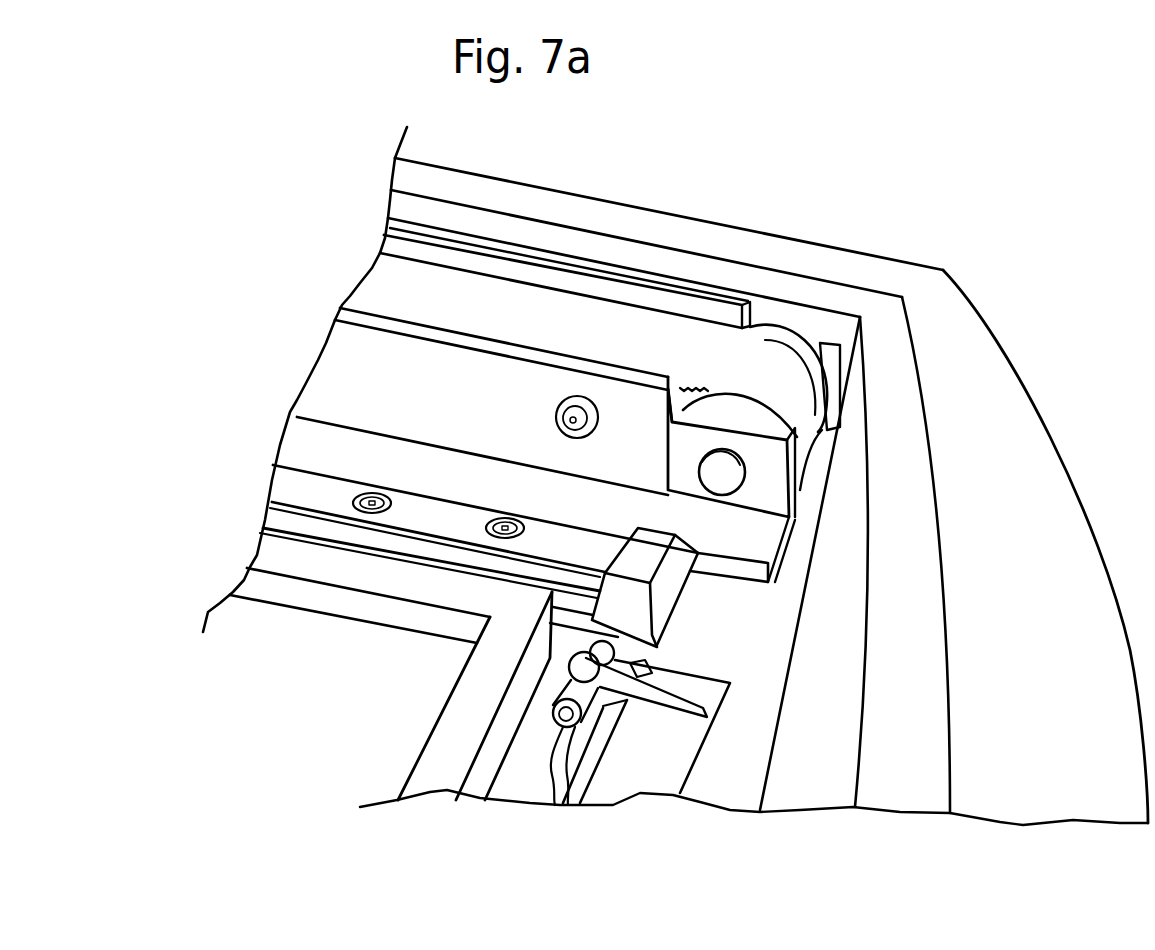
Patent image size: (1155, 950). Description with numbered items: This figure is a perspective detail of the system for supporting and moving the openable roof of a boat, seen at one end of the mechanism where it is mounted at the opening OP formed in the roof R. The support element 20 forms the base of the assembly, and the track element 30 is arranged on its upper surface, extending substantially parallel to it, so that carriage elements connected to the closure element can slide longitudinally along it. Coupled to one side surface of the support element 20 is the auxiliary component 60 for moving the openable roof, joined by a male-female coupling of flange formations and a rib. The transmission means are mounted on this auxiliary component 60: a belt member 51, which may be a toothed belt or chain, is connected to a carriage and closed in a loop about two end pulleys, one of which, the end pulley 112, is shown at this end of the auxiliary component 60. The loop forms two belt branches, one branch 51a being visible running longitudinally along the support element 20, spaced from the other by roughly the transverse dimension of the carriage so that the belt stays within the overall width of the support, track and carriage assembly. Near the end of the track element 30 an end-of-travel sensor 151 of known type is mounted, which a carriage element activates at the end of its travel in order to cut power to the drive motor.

The belt member 51 is at (496, 278).
The belt branch 51a is at (652, 333).
The roof R is at (853, 284).
The end pulley 112 is at (827, 420).
The auxiliary component 60 is at (369, 383).
The track element 30 is at (322, 496).
The opening OP is at (290, 590).
The support element 20 is at (695, 583).
The end-of-travel sensor 151 is at (607, 693).